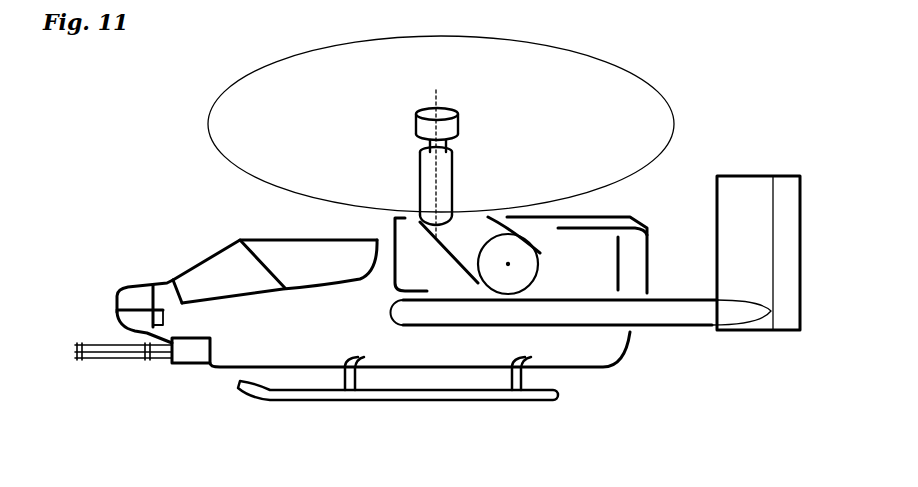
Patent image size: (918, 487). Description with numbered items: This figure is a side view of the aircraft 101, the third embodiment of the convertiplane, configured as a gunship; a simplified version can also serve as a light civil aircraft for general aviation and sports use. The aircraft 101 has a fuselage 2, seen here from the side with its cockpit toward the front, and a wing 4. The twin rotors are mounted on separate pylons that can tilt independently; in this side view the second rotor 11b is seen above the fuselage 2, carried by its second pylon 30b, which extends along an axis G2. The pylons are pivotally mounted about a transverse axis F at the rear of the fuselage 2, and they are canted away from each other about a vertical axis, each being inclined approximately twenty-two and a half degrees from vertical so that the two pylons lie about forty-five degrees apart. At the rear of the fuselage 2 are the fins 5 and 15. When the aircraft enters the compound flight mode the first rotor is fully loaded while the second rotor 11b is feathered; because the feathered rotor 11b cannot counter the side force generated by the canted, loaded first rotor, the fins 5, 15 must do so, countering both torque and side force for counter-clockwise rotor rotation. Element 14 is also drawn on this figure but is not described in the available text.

The aircraft 101 is at (178, 215).
The second rotor 11b is at (614, 86).
The axis of second pylon G2 is at (427, 170).
The transverse axis F is at (501, 274).
The second pylon 30b is at (462, 234).
The fuselage 2 is at (290, 331).
The wing 4 is at (489, 315).
The rear fuselage body 14 is at (562, 260).
The fin 5 is at (753, 250).
The fin 15 is at (783, 285).